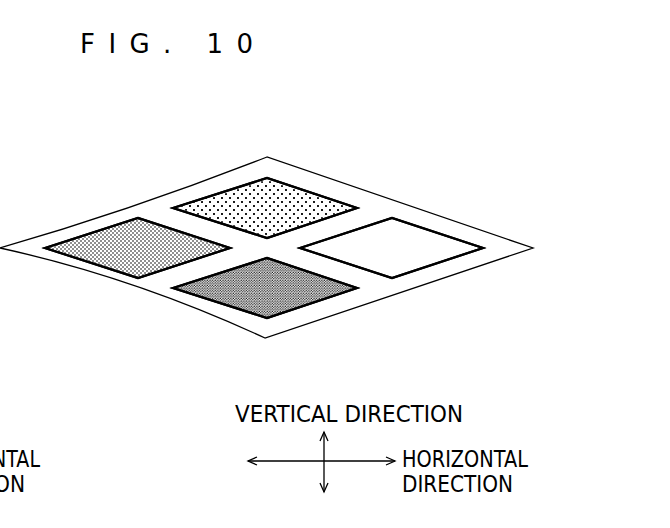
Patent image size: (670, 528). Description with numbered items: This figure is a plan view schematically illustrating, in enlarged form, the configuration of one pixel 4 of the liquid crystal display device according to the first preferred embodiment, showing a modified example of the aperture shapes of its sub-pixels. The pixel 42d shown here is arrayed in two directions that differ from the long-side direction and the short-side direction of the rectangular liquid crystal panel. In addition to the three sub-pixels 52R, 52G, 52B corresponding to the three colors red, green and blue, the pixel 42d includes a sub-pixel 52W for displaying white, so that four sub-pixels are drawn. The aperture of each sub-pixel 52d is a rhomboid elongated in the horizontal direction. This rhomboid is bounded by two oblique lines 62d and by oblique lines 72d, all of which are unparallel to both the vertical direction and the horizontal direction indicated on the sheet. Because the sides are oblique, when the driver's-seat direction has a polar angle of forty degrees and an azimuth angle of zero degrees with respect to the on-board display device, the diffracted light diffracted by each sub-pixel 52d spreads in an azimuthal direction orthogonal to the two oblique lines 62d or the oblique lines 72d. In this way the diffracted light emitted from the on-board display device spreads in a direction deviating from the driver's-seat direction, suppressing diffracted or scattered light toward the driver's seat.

The pixel 4 is at (266, 219).
The pixel 42d is at (246, 170).
The oblique lines 62d is at (228, 190).
The oblique lines 72d is at (281, 187).
The sub-pixel 52d is at (286, 245).
The sub-pixel 52R is at (300, 180).
The sub-pixel 52G is at (117, 258).
The sub-pixel 52B is at (222, 297).
The sub-pixel 52W is at (398, 237).